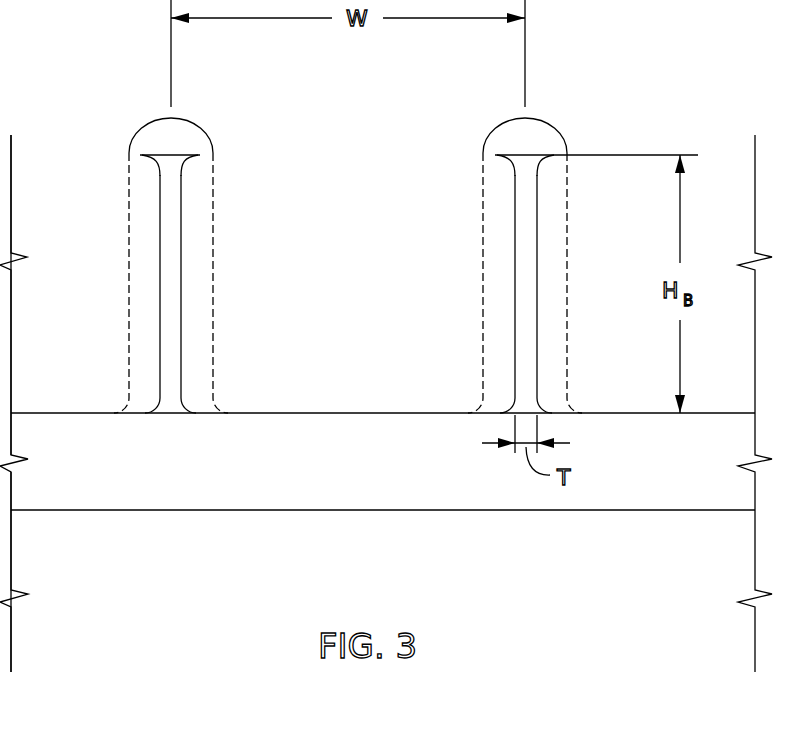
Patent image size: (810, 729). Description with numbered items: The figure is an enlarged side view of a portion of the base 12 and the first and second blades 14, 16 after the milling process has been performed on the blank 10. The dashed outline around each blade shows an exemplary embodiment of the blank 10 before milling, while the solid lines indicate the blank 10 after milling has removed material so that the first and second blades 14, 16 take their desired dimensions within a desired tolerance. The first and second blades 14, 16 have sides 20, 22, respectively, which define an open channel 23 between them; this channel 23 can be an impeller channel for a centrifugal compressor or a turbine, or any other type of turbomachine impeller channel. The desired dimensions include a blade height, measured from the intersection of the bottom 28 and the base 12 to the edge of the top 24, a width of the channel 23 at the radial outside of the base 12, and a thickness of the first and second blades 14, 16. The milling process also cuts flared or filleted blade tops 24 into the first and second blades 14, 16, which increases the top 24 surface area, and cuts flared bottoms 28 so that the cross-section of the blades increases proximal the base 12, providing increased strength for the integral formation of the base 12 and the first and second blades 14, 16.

The blank 10 is at (213, 212).
The base 12 is at (355, 470).
The first blade 14 is at (181, 264).
The second blade 16 is at (522, 284).
The side of first blade 20 is at (182, 258).
The side of second blade 22 is at (515, 298).
The open channel 23 is at (358, 180).
The blade top 24 is at (180, 155).
The blade bottom 28 is at (170, 403).